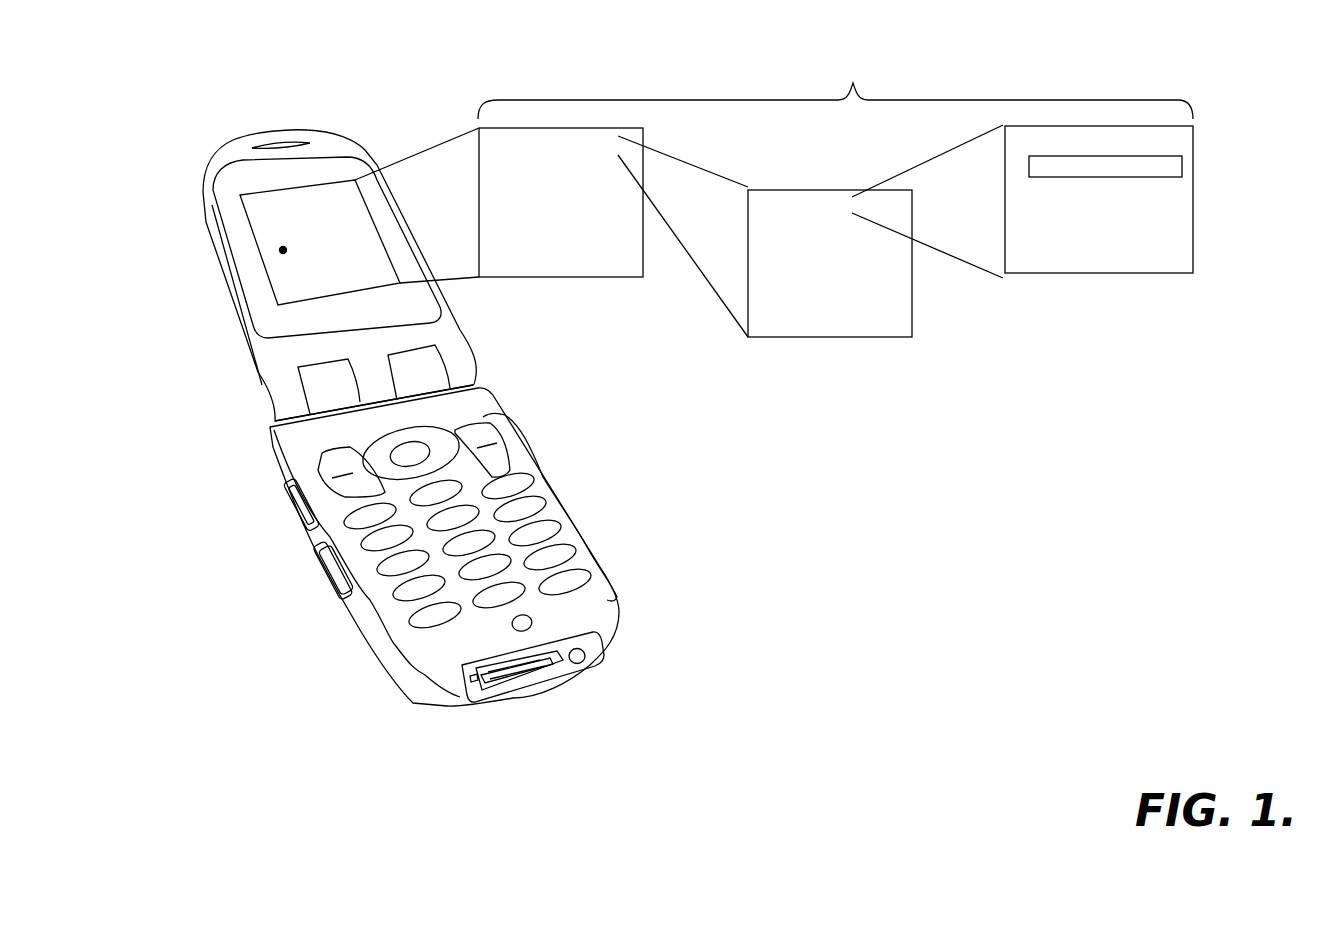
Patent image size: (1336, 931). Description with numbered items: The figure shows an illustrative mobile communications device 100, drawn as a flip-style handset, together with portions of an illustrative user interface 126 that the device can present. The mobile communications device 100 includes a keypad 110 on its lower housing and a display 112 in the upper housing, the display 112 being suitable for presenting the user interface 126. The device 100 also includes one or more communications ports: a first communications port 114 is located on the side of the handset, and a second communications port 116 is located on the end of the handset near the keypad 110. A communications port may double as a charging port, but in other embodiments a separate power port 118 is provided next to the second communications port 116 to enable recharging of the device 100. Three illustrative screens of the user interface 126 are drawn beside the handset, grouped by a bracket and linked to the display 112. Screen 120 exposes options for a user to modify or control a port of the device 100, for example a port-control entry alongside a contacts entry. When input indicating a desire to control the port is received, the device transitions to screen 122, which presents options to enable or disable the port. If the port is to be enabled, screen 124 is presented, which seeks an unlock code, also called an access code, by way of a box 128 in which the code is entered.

The mobile communications device 100 is at (406, 428).
The keypad 110 is at (578, 510).
The display 112 is at (283, 250).
The first communications port 114 is at (290, 482).
The second communications port 116 is at (513, 680).
The power port 118 is at (578, 665).
The screen 120 is at (527, 277).
The screen 122 is at (783, 337).
The screen 124 is at (1125, 217).
The user interface 126 is at (862, 208).
The box 128 is at (1158, 177).